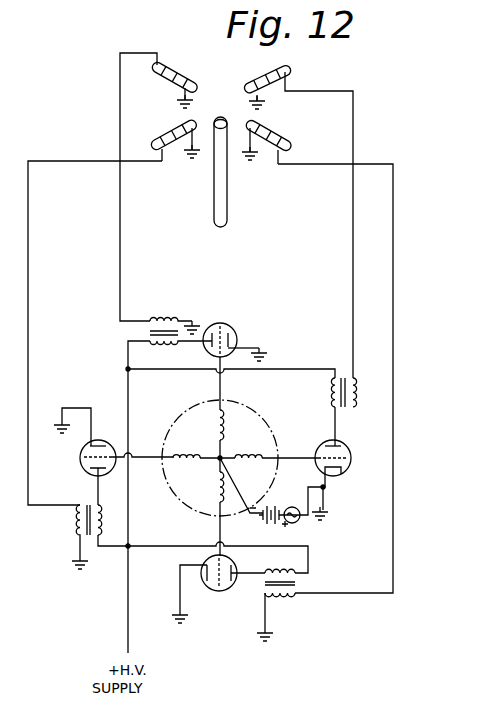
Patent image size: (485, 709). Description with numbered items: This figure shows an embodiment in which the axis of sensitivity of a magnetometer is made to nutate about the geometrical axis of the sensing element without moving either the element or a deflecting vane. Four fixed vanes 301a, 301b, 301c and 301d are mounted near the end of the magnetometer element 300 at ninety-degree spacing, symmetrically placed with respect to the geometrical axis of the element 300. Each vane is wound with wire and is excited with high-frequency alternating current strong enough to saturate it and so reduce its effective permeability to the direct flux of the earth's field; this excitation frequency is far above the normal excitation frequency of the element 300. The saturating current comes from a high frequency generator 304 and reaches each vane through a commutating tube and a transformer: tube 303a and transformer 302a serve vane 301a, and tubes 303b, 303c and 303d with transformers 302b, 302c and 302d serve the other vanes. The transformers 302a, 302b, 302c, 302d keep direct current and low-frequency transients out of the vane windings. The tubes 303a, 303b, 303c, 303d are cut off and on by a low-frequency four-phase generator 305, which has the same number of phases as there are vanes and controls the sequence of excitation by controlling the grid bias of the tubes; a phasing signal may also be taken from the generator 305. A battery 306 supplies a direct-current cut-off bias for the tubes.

The magnetometer element 300 is at (228, 184).
The fixed vane 301a is at (292, 70).
The fixed vane 301b is at (283, 140).
The fixed vane 301c is at (166, 138).
The fixed vane 301d is at (172, 72).
The transformer 302a is at (342, 373).
The transformer 302b is at (288, 603).
The transformer 302c is at (78, 525).
The transformer 302d is at (165, 317).
The commutating tube 303a is at (320, 443).
The commutating tube 303b is at (238, 556).
The commutating tube 303c is at (94, 468).
The commutating tube 303d is at (233, 326).
The high frequency generator 304 is at (307, 526).
The low-frequency multiphase generator 305 is at (192, 527).
The battery 306 is at (262, 524).